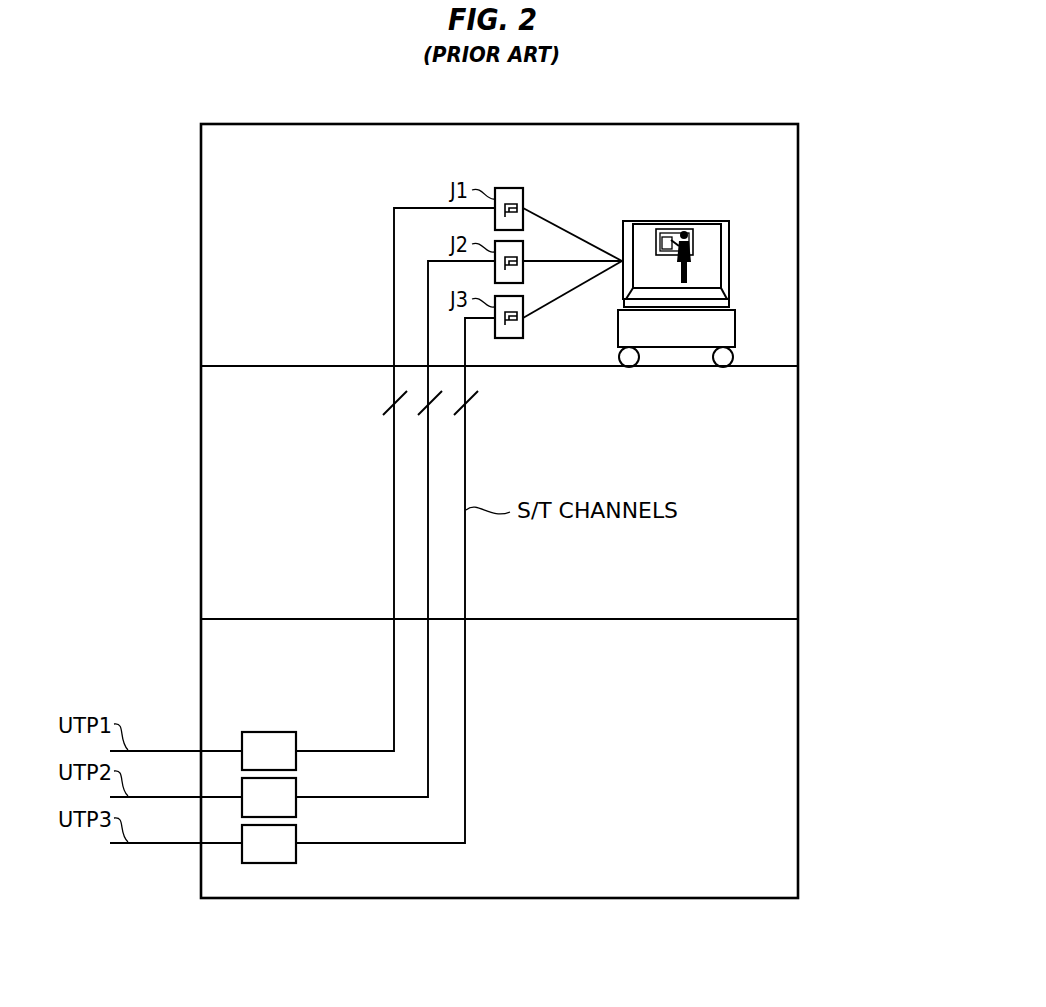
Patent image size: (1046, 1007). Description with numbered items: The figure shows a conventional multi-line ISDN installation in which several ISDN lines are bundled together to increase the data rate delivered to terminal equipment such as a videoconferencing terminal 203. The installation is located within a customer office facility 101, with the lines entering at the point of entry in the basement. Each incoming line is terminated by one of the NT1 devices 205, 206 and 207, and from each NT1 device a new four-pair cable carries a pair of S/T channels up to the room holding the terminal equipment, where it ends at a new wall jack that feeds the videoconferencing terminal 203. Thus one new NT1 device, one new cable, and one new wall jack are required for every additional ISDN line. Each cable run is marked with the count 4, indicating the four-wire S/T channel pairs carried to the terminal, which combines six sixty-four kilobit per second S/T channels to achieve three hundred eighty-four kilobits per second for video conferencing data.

The customer office facility 101 is at (850, 882).
The videoconferencing terminal 203 is at (683, 220).
The NT1 device 205 is at (297, 739).
The NT1 device 206 is at (297, 786).
The NT1 device 207 is at (297, 832).
The four-wire S/T channel indicator 4 is at (428, 398).